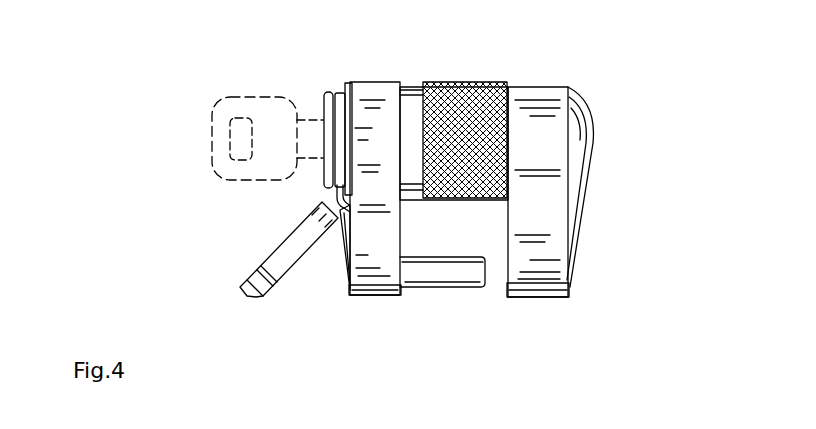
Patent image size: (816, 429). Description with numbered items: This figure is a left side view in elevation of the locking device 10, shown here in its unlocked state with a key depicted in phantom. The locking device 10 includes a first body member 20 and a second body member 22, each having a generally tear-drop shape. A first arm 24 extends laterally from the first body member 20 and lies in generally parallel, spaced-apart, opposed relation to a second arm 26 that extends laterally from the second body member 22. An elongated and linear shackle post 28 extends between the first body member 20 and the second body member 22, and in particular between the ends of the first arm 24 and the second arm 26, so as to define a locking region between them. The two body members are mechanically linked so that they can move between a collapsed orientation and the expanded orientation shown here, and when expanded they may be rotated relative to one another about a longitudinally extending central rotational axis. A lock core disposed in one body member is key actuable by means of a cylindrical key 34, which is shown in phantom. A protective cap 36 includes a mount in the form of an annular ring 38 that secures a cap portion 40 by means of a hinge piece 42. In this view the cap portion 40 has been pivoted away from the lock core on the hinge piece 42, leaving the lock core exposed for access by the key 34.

The locking device 10 is at (438, 187).
The first body member 20 is at (378, 95).
The second body member 22 is at (555, 213).
The first arm 24 is at (377, 296).
The second arm 26 is at (550, 298).
The shackle post 28 is at (440, 288).
The cylindrical key 34 is at (237, 98).
The protective cap 36 is at (247, 266).
The annular ring 38 is at (347, 83).
The cap portion 40 is at (292, 280).
The hinge piece 42 is at (330, 199).